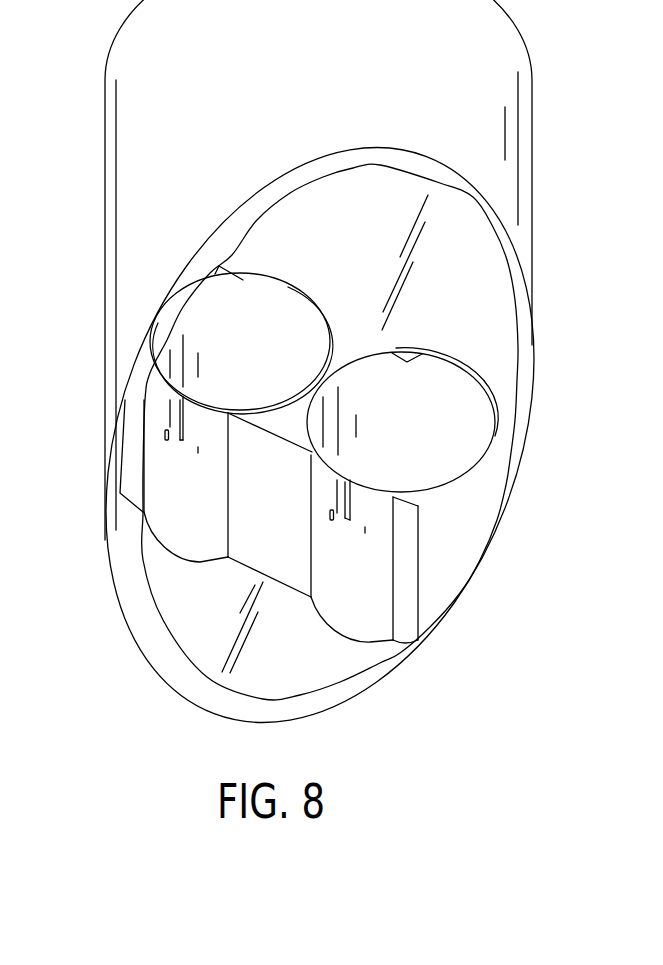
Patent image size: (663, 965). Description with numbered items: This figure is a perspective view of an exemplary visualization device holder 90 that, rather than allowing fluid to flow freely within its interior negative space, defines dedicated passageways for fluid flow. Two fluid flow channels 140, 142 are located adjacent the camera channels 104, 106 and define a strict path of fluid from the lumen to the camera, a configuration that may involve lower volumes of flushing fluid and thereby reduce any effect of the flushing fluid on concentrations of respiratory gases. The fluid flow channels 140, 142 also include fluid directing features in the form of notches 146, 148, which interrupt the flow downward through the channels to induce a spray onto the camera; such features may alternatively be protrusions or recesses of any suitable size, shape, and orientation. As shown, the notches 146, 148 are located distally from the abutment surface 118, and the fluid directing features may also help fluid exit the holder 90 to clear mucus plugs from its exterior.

The holder 90 is at (127, 173).
The camera channel 104 is at (213, 367).
The camera channel 106 is at (467, 427).
The abutment surface 118 is at (403, 462).
The fluid flow channel 140 is at (158, 468).
The fluid flow channel 142 is at (393, 607).
The notch 146 is at (174, 418).
The notch 148 is at (353, 508).